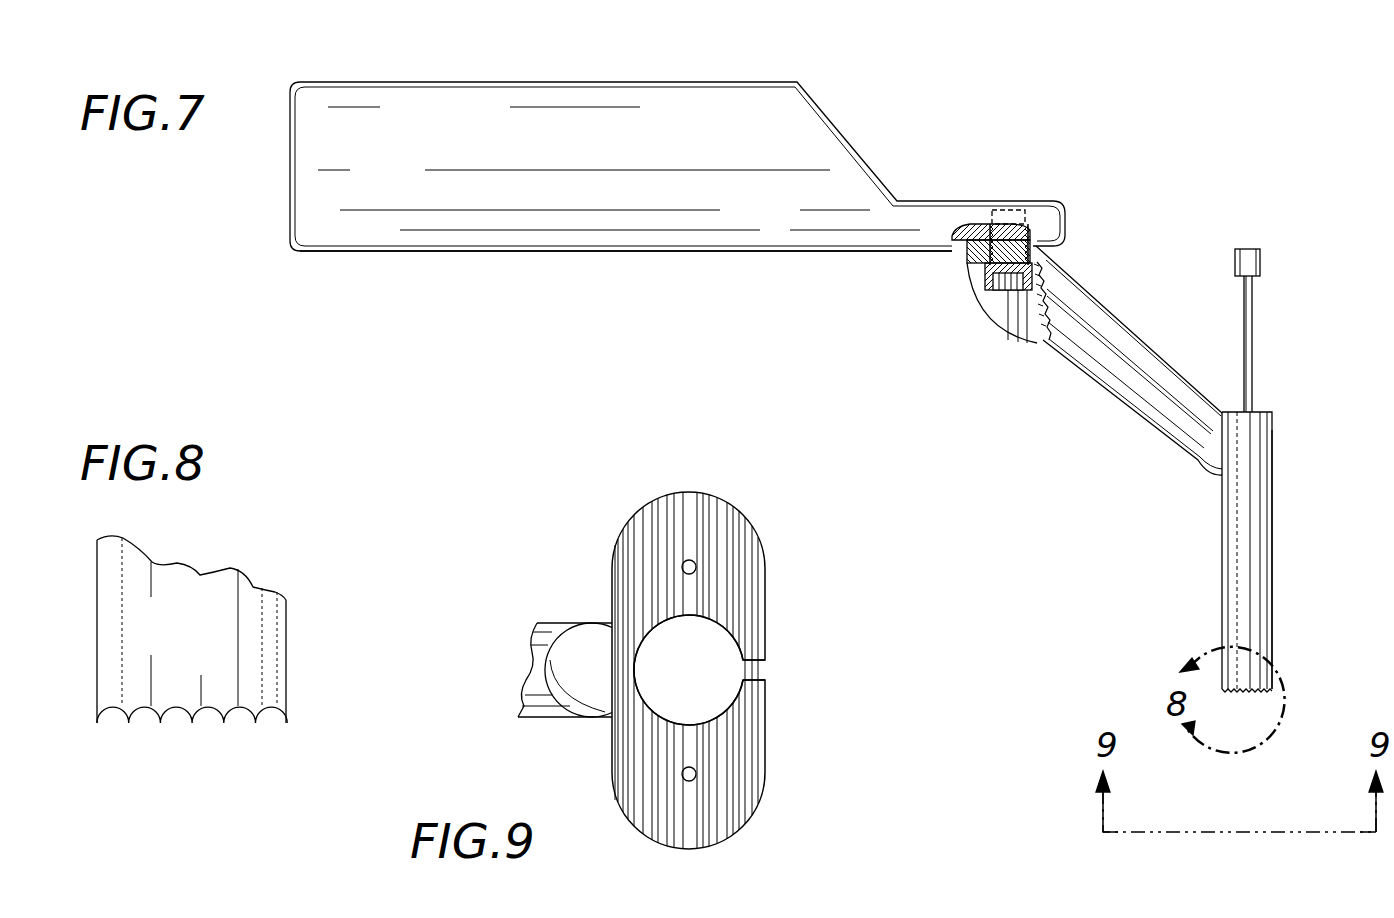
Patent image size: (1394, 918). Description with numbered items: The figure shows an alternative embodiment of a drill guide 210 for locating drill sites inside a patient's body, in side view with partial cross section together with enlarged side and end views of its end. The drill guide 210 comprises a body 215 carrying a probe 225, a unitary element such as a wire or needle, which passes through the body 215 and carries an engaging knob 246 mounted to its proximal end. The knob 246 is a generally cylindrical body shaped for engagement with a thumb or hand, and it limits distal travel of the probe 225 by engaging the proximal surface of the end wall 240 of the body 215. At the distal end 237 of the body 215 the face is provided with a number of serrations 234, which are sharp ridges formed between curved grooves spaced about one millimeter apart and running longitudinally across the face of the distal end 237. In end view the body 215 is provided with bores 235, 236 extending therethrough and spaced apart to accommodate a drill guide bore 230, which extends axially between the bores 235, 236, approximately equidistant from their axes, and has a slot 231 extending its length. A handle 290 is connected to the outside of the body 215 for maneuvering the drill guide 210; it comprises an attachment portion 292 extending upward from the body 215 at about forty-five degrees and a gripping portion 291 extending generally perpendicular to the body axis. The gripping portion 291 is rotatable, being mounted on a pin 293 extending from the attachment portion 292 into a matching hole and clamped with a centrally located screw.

In FIG. 7, the drill guide 210 is at (683, 72).
In FIG. 7, the gripping portion 291 is at (462, 252).
In FIG. 7, the pin 293 is at (990, 222).
In FIG. 7, the handle 290 is at (903, 295).
In FIG. 7, the attachment portion 292 is at (1050, 350).
In FIG. 9, the attachment portion 292 is at (583, 655).
In FIG. 7, the engaging knob 246 is at (1250, 250).
In FIG. 7, the probe 225 is at (1253, 318).
In FIG. 7, the end wall 240 is at (1258, 412).
In FIG. 7, the body 215 is at (1273, 536).
In FIG. 7, the distal end 237 is at (1262, 693).
In FIG. 8, the distal end 237 is at (177, 708).
In FIG. 9, the distal end 237 is at (730, 512).
In FIG. 8, the serrations 234 is at (255, 720).
In FIG. 9, the serrations 234 is at (639, 564).
In FIG. 9, the bore 235 is at (684, 563).
In FIG. 9, the bore 236 is at (693, 774).
In FIG. 9, the drill guide bore 230 is at (689, 660).
In FIG. 9, the slot 231 is at (761, 672).